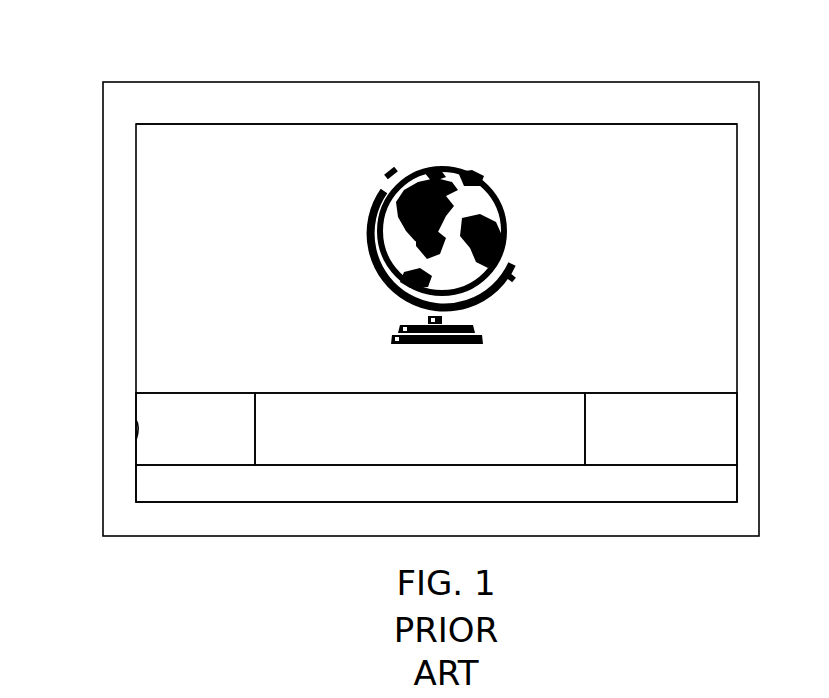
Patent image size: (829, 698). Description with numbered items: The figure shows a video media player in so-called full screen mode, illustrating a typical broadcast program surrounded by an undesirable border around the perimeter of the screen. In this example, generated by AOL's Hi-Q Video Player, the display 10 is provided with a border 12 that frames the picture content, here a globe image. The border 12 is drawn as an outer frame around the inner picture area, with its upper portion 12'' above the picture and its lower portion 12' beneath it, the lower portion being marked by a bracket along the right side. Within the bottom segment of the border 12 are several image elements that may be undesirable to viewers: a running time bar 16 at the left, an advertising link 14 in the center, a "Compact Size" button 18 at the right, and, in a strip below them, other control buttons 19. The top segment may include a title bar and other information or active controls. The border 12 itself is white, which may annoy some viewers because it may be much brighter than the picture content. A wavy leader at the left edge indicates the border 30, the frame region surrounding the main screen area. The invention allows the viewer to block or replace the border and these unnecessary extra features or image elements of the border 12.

The display 10 is at (288, 51).
The border 12 is at (422, 313).
The upper display portion 12'' is at (436, 67).
The lower display portion 12' is at (478, 464).
The advertising link 14 is at (420, 429).
The running time bar 16 is at (195, 429).
The "Compact Size" button 18 is at (661, 429).
The control buttons 19 is at (436, 483).
The border 30 is at (138, 432).